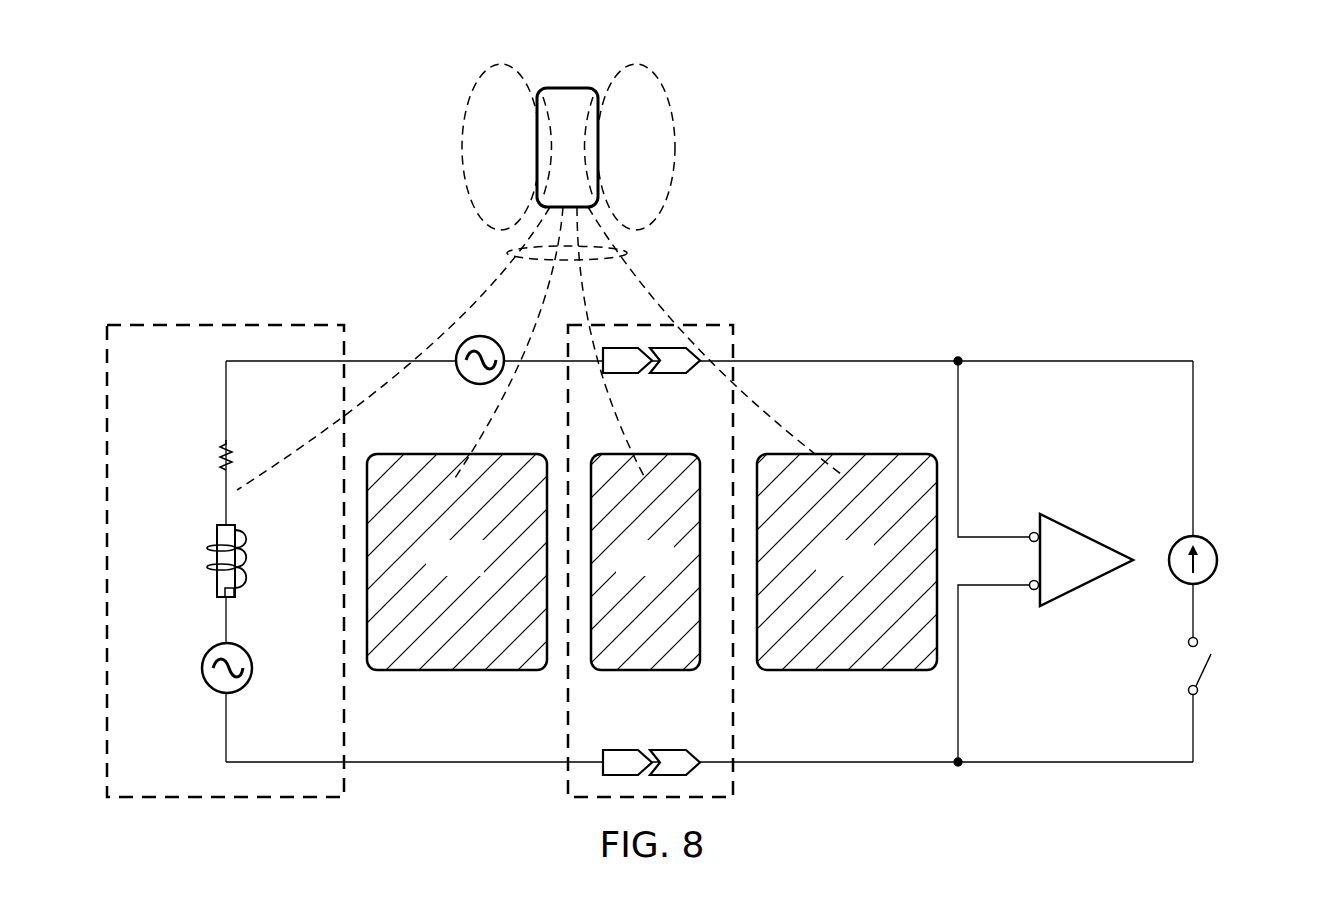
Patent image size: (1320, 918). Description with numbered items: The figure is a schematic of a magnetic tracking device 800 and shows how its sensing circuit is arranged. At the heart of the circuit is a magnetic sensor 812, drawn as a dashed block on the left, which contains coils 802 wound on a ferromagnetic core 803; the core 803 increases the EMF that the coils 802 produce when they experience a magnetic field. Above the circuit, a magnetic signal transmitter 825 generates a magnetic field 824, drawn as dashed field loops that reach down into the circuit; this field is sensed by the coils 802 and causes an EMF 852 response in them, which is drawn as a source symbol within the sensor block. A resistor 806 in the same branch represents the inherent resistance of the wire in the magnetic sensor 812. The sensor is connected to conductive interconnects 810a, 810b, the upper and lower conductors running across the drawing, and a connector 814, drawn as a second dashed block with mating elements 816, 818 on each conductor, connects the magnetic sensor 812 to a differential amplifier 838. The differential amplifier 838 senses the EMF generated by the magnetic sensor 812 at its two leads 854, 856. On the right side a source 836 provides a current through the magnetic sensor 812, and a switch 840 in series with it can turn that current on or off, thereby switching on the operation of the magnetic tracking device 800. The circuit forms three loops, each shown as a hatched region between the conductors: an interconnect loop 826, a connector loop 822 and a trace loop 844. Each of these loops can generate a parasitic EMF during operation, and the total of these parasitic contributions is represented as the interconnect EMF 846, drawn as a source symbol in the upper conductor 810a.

The magnetic tracking device 800 is at (1040, 172).
The coils 802 is at (244, 561).
The ferromagnetic core 803 is at (217, 579).
The resistor 806 is at (221, 452).
The conductive interconnect 810a is at (402, 360).
The conductive interconnect 810b is at (455, 763).
The magnetic sensor 812 is at (195, 801).
The connector 814 is at (695, 321).
The connector element 816 is at (626, 375).
The connector element 818 is at (674, 375).
The connector loop 822 is at (623, 575).
The magnetic field 824 is at (462, 142).
The magnetic signal transmitter 825 is at (566, 88).
The interconnect loop 826 is at (433, 575).
The source 836 is at (1218, 562).
The differential amplifier 838 is at (1090, 535).
The switch 840 is at (1206, 671).
The trace loop 844 is at (823, 575).
The interconnect EMF 846 is at (473, 385).
The EMF 852 is at (202, 670).
The lead 854 is at (1030, 534).
The lead 856 is at (1030, 588).